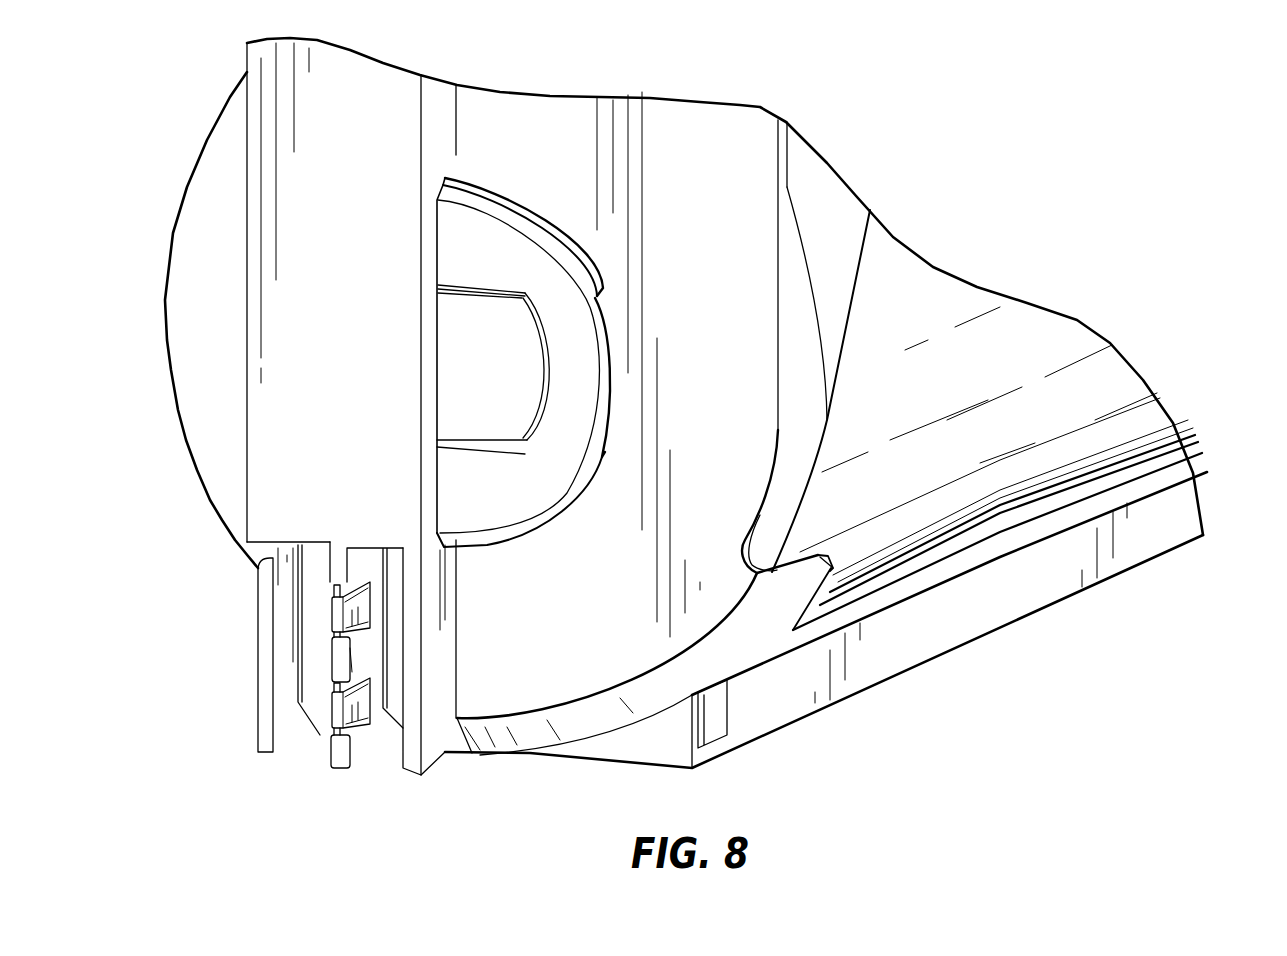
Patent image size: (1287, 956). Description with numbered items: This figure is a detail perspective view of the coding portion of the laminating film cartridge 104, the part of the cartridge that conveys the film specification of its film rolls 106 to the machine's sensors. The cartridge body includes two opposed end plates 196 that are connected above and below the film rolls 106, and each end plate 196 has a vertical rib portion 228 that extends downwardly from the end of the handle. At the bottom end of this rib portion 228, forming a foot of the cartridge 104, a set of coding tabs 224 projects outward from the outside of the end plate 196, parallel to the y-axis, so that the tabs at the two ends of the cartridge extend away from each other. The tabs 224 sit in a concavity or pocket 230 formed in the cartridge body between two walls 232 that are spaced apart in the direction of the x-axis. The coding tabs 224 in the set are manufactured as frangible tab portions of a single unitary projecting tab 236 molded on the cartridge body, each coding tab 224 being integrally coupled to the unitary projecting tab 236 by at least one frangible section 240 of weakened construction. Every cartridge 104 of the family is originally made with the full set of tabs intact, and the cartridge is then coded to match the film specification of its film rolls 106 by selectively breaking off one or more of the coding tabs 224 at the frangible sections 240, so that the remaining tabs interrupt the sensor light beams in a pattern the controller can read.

The cartridge 104 is at (575, 63).
The film rolls 106 is at (810, 243).
The end plate 196 is at (718, 381).
The vertical rib portion 228 is at (370, 320).
The walls 232 is at (265, 675).
The coding tab 224 is at (333, 607).
The frangible section 240 is at (337, 588).
The unitary projecting tab 236 is at (358, 660).
The concavity or pocket 230 is at (387, 653).